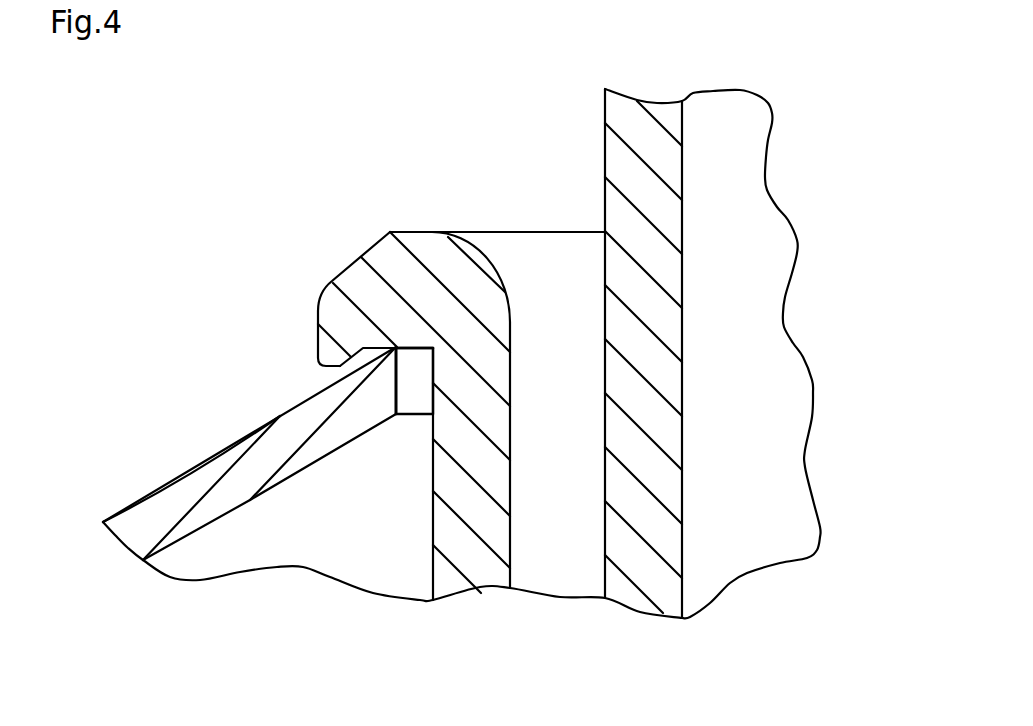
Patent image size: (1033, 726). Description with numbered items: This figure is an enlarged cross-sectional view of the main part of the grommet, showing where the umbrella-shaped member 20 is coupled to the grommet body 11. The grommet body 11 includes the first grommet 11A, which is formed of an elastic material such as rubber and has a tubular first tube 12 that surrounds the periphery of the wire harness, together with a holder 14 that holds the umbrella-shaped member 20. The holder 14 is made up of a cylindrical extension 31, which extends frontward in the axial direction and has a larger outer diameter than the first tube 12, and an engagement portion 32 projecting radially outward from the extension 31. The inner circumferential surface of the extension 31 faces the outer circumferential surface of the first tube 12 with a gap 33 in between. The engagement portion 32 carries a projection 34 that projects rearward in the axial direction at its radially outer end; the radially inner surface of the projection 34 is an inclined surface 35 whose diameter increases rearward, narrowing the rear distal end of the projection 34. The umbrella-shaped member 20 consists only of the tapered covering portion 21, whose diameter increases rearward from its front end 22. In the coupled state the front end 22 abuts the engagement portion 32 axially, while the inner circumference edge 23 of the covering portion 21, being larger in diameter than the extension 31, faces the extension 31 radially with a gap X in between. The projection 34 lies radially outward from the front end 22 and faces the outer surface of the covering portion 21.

The grommet body 11 is at (665, 353).
The first grommet 11A is at (605, 112).
The first tube 12 is at (615, 474).
The holder 14 is at (502, 232).
The umbrella-shaped member 20 is at (168, 482).
The covering portion 21 is at (258, 458).
The front end 22 is at (408, 347).
The inner circumference edge 23 is at (397, 398).
The extension 31 is at (443, 531).
The engagement portion 32 is at (376, 297).
The gap 33 is at (556, 352).
The projection 34 is at (330, 355).
The inclined surface 35 is at (355, 367).
The gap X is at (414, 384).